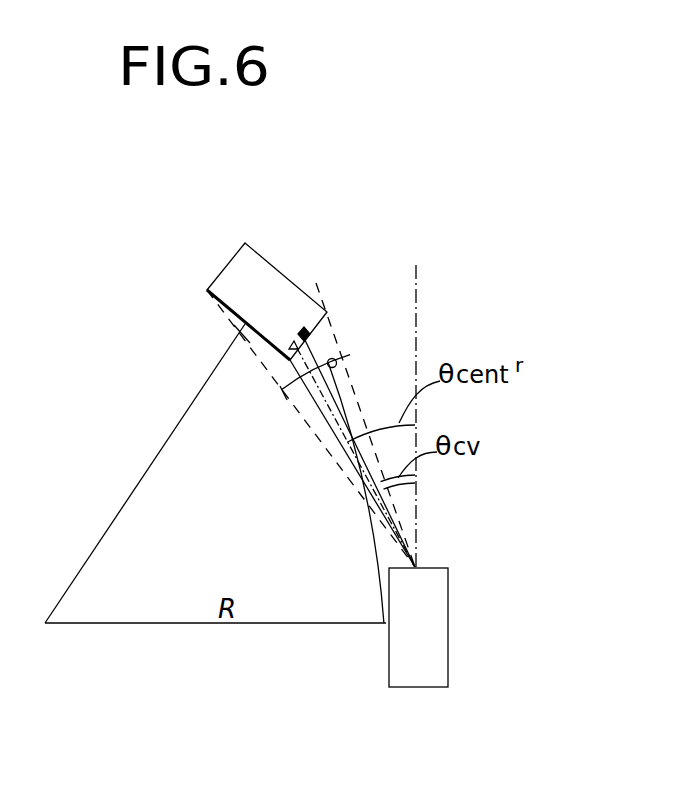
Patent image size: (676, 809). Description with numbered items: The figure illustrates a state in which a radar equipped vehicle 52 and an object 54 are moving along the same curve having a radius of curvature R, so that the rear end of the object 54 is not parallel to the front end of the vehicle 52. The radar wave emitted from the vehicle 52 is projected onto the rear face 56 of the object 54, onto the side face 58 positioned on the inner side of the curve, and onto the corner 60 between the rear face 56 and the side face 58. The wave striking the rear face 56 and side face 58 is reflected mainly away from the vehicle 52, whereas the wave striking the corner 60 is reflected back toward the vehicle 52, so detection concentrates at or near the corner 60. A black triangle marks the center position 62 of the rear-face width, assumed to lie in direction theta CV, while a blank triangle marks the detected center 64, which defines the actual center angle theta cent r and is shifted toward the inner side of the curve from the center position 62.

The radar equipped vehicle 52 is at (435, 637).
The object 54 is at (281, 275).
The rear face 56 is at (308, 334).
The side face 58 is at (238, 320).
The corner 60 is at (282, 392).
The center position 62 is at (300, 330).
The detected center 64 is at (292, 343).